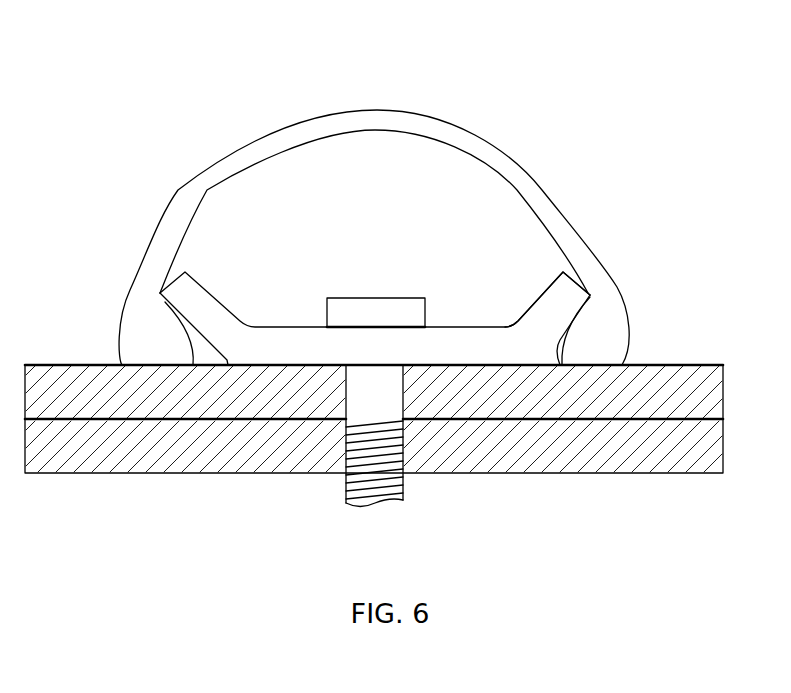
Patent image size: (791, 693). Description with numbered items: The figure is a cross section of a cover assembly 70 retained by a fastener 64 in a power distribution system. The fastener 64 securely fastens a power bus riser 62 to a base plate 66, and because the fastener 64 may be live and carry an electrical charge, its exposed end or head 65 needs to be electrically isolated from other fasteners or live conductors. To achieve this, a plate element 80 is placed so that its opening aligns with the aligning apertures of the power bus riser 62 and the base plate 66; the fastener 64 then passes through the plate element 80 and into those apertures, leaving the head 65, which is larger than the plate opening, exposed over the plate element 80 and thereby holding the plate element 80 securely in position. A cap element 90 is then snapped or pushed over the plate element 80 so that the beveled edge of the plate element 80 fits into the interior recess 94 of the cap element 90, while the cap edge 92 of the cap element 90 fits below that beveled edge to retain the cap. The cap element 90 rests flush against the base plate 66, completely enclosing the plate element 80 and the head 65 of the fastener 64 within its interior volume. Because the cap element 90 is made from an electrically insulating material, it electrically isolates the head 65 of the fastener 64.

The cover assembly 70 is at (386, 196).
The cap element 90 is at (492, 145).
The interior recess 94 is at (615, 287).
The plate element 80 is at (270, 347).
The cap edge 92 is at (565, 352).
The head of the fastener 65 is at (350, 310).
The power bus riser 62 is at (168, 400).
The base plate 66 is at (240, 455).
The fastener 64 is at (345, 485).